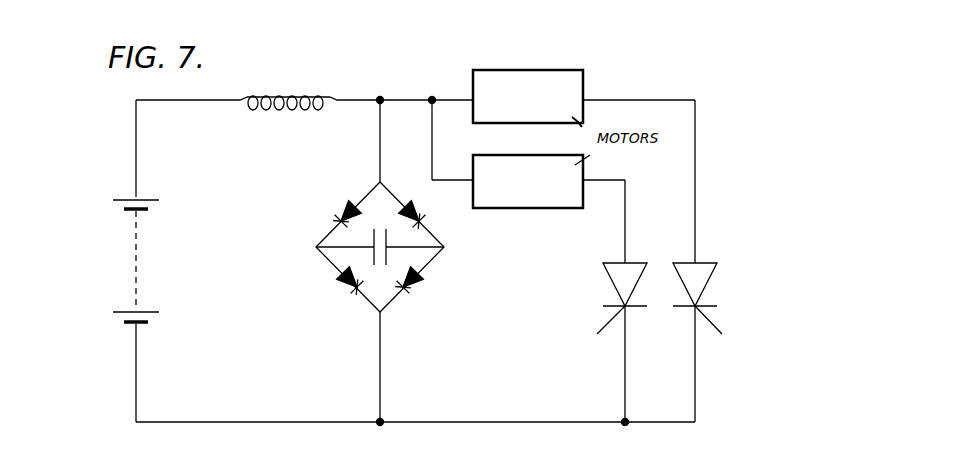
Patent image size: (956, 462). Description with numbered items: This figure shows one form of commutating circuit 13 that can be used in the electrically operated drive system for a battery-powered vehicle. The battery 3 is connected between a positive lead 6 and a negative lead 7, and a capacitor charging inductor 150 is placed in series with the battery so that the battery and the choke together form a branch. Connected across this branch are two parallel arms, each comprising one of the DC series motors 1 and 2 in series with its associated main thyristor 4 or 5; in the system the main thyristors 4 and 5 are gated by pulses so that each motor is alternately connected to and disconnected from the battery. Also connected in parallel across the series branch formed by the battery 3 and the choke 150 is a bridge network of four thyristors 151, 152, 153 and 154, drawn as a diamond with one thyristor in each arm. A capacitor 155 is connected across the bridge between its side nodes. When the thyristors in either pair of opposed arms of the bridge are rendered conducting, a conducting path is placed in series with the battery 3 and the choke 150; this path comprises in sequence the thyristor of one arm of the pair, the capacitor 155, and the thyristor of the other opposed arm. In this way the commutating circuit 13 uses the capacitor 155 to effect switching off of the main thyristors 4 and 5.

The DC series motor 1 is at (552, 76).
The DC series motor 2 is at (540, 161).
The battery 3 is at (138, 261).
The main thyristor 4 is at (681, 286).
The main thyristor 5 is at (602, 279).
The positive lead 6 is at (197, 101).
The negative lead 7 is at (304, 421).
The commutating circuit 13 is at (304, 118).
The capacitor charging inductor 150 is at (303, 99).
The thyristor 151 is at (426, 221).
The thyristor 152 is at (334, 282).
The thyristor 153 is at (334, 220).
The thyristor 154 is at (430, 284).
The capacitor 155 is at (371, 226).